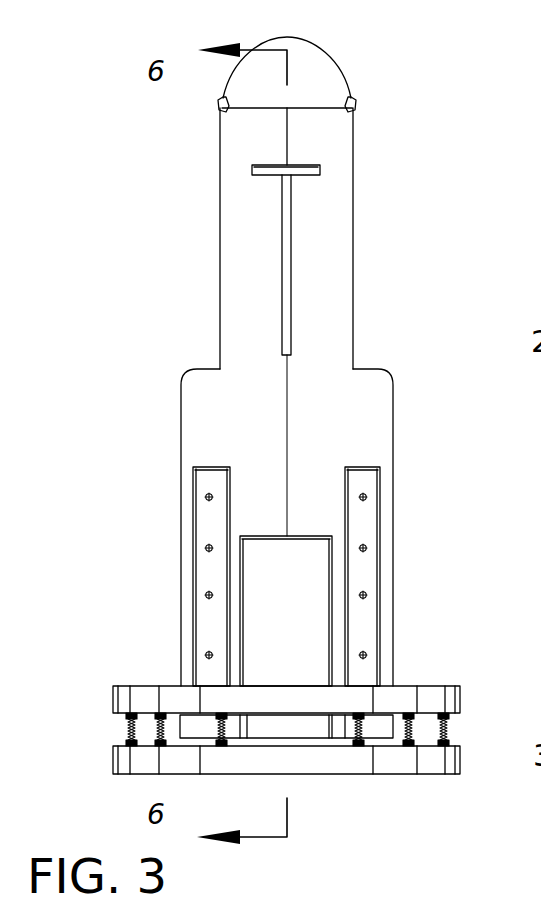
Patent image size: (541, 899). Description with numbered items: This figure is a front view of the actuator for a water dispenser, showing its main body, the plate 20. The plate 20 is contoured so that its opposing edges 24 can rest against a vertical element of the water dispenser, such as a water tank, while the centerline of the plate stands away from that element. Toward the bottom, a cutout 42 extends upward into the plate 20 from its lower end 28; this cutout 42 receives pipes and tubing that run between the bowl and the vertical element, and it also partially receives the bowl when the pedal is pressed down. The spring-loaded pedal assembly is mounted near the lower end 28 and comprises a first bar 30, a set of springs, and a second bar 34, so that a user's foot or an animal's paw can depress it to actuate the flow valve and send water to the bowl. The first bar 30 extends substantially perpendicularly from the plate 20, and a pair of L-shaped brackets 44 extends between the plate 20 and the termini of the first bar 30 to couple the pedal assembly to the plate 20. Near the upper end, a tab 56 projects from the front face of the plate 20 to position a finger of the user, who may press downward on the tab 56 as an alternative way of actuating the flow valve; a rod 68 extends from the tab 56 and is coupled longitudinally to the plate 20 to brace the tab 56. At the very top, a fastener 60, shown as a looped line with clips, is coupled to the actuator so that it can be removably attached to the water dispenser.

The plate 20 is at (373, 392).
The opposing edges 24 is at (220, 222).
The lower end 28 is at (243, 735).
The first bar 30 is at (438, 697).
The second bar 34 is at (452, 761).
The cutout 42 is at (284, 592).
The pair of brackets 44 is at (357, 493).
The tab 56 is at (318, 167).
The fastener 60 is at (302, 38).
The rod 68 is at (292, 244).